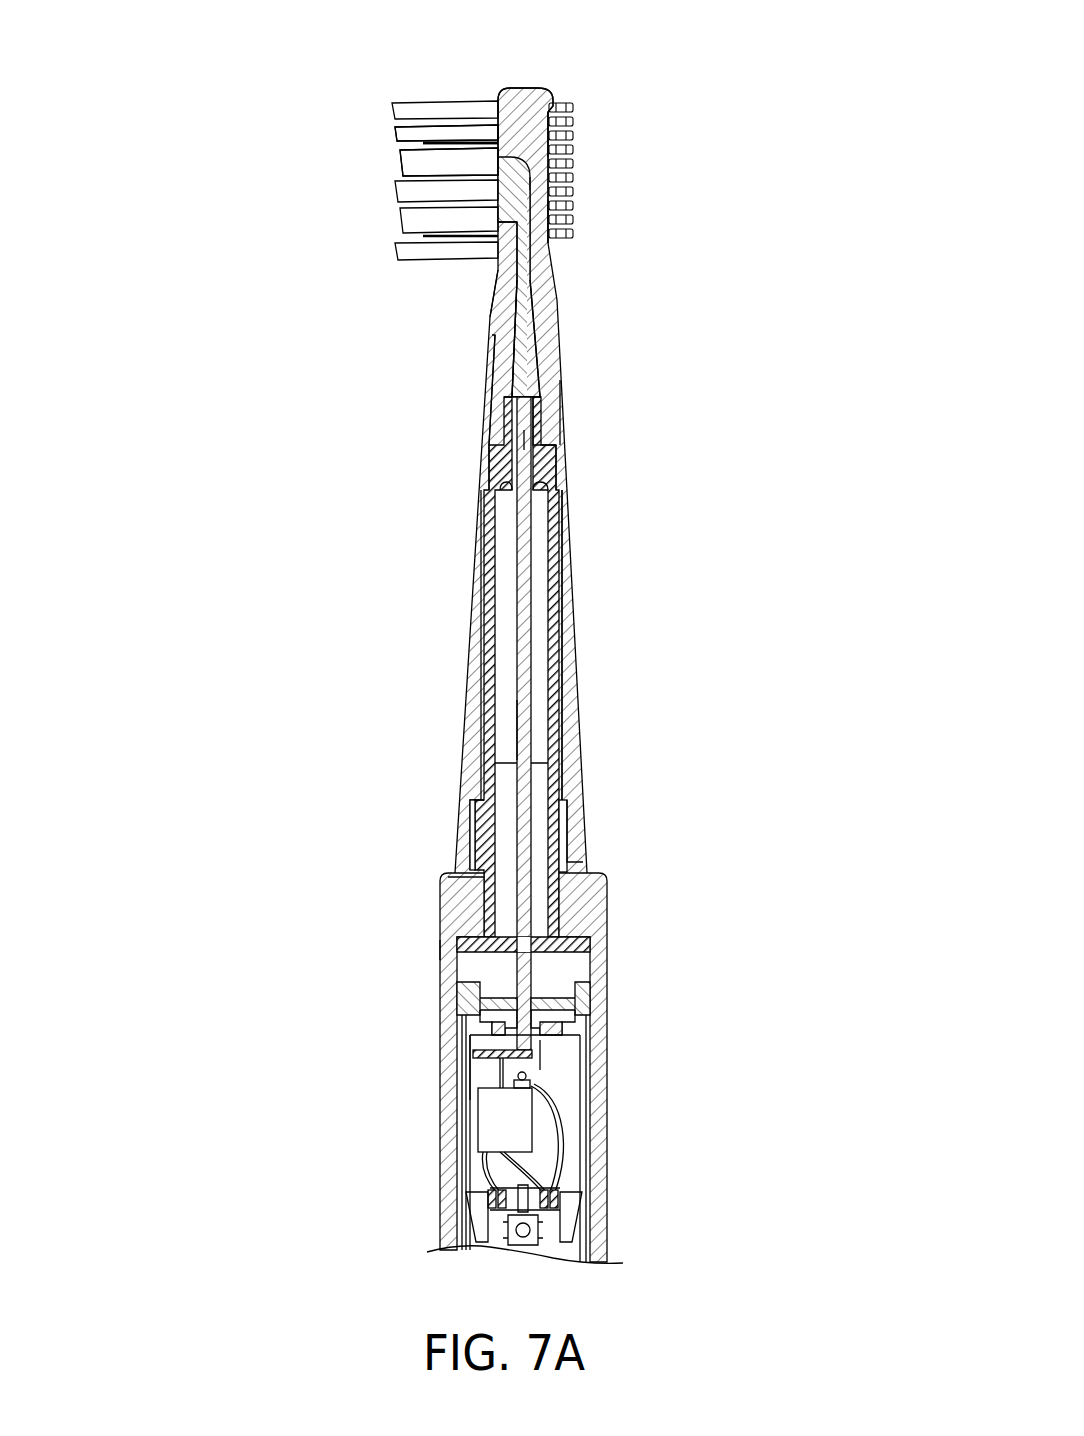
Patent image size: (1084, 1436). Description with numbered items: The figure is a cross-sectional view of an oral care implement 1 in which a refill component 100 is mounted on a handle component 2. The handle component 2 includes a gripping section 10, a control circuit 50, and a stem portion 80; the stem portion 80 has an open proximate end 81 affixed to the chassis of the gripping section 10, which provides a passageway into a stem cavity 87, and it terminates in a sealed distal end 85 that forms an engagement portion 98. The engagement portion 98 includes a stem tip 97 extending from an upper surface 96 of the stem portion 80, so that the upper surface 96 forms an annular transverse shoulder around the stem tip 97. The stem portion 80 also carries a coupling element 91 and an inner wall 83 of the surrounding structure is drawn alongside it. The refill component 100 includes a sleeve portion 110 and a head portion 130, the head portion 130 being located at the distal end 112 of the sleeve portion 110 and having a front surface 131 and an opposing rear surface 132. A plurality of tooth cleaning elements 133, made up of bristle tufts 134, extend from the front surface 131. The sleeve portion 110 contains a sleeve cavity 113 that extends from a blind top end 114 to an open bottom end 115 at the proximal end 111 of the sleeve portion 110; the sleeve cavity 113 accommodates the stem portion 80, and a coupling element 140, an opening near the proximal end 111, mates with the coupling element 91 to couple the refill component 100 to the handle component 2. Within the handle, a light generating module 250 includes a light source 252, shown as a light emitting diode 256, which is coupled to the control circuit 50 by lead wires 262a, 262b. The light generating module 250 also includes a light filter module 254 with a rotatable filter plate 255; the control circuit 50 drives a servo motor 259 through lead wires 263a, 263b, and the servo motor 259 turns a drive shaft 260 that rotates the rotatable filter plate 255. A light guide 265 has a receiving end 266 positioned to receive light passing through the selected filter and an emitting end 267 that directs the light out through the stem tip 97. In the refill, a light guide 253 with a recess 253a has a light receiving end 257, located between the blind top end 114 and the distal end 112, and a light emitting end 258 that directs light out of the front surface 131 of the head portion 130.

The oral care implement 1 is at (735, 228).
The handle component 2 is at (428, 952).
The gripping section 10 is at (600, 1083).
The control circuit 50 is at (545, 1248).
The stem portion 80 is at (485, 553).
The open proximate end 81 is at (540, 948).
The inner sleeve wall 83 is at (556, 650).
The sealed distal end 85 is at (540, 425).
The stem cavity 87 is at (512, 605).
The coupling element 91 is at (570, 860).
The upper surface 96 is at (548, 424).
The stem tip 97 is at (495, 440).
The engagement portion 98 is at (541, 397).
The refill component 100 is at (567, 118).
The sleeve portion 110 is at (566, 580).
The proximal end 111 is at (462, 842).
The distal end 112 is at (505, 297).
The sleeve cavity 113 is at (488, 656).
The blind top end 114 is at (500, 400).
The open bottom end 115 is at (470, 868).
The head portion 130 is at (530, 105).
The front surface 131 is at (407, 133).
The rear surface 132 is at (568, 152).
The tooth cleaning elements 133 is at (388, 92).
The bristle tufts 134 is at (408, 160).
The coupling element 140 is at (585, 830).
The light generating module 250 is at (560, 1003).
The light source 252 is at (550, 1095).
The light guide 253 is at (523, 292).
The core recess 253a is at (528, 522).
The light filter module 254 is at (480, 1075).
The rotatable filter plate 255 is at (476, 1053).
The light emitting diode 256 is at (553, 1055).
The light receiving end 257 is at (525, 375).
The light emitting end 258 is at (493, 182).
The servo motor 259 is at (497, 1123).
The drive shaft 260 is at (503, 1075).
The lead wire 262a is at (560, 1150).
The lead wire 262b is at (530, 1135).
The lead wire 263a is at (490, 1180).
The lead wire 263b is at (556, 1180).
The light guide 265 is at (522, 732).
The receiving end 266 is at (524, 1018).
The emitting end 267 is at (524, 428).